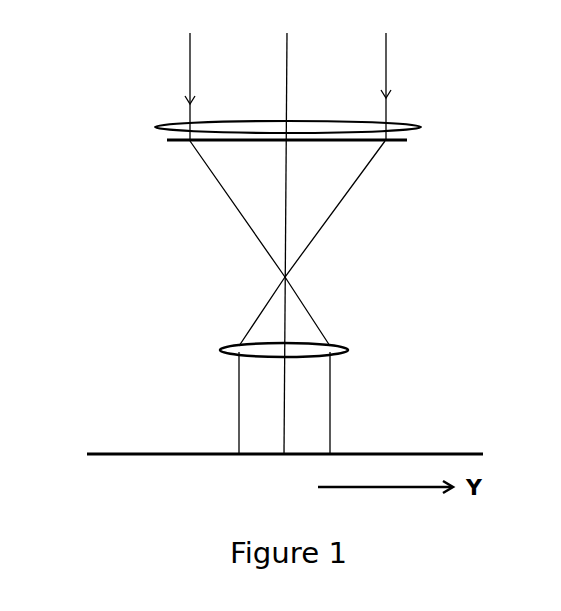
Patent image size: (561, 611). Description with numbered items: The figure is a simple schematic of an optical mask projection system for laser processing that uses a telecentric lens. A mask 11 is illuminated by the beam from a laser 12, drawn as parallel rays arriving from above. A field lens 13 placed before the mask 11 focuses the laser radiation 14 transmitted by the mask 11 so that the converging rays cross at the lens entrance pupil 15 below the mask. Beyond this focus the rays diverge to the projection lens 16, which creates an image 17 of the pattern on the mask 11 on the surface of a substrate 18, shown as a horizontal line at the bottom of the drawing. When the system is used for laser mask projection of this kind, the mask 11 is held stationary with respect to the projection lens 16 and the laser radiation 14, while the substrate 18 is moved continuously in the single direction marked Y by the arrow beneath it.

The mask 11 is at (162, 148).
The laser 12 is at (183, 103).
The field lens 13 is at (438, 123).
The laser radiation 14 is at (342, 202).
The lens entrance pupil 15 is at (300, 275).
The projection lens 16 is at (215, 350).
The image 17 is at (308, 450).
The substrate 18 is at (105, 462).